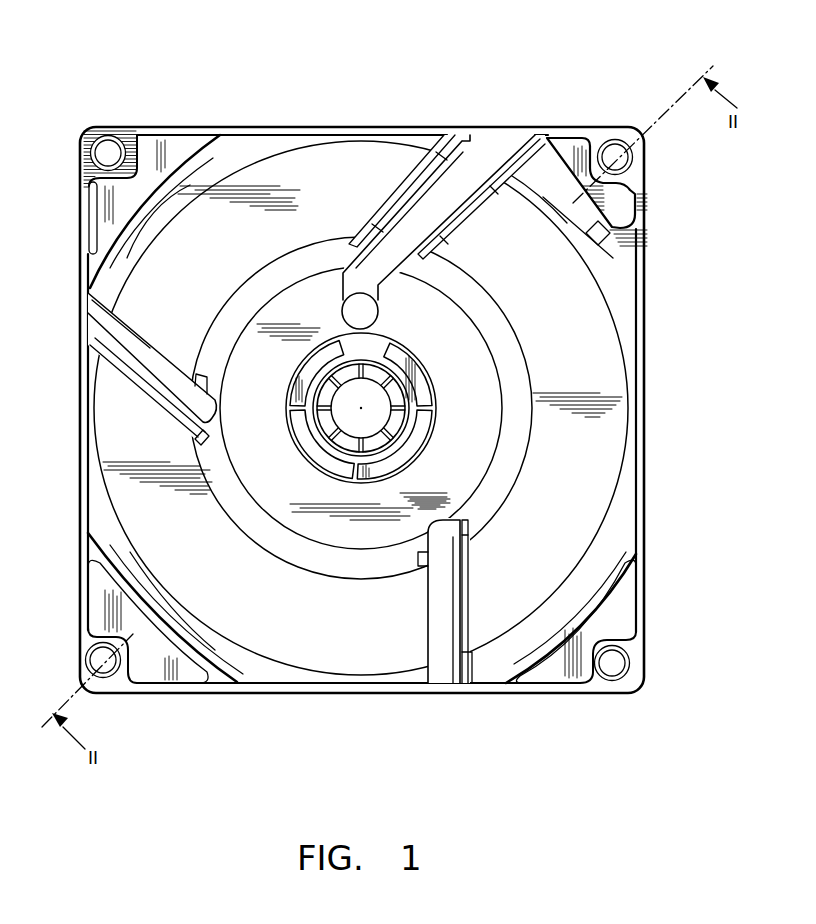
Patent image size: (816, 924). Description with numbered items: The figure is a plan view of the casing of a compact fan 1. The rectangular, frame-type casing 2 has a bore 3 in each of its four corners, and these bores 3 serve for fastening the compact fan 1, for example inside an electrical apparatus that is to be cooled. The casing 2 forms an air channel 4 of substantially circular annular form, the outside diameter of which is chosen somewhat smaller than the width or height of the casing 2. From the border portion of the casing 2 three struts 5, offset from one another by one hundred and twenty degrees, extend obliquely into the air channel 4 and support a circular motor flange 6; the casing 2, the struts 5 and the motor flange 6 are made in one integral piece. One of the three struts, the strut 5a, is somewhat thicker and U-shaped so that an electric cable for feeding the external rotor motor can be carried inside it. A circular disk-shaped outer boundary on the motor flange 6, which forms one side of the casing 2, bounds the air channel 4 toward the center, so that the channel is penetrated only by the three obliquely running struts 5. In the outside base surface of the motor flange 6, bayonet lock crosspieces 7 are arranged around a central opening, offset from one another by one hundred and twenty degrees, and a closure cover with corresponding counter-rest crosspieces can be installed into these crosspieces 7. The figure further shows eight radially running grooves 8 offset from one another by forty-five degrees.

The compact fan 1 is at (404, 124).
The casing 2 is at (290, 690).
The bores 3 is at (118, 140).
The air channel 4 is at (603, 384).
The struts 5 is at (150, 357).
The strut 5a is at (440, 213).
The motor flange 6 is at (470, 472).
The bayonet lock crosspieces 7 is at (290, 398).
The radially running grooves 8 is at (388, 432).